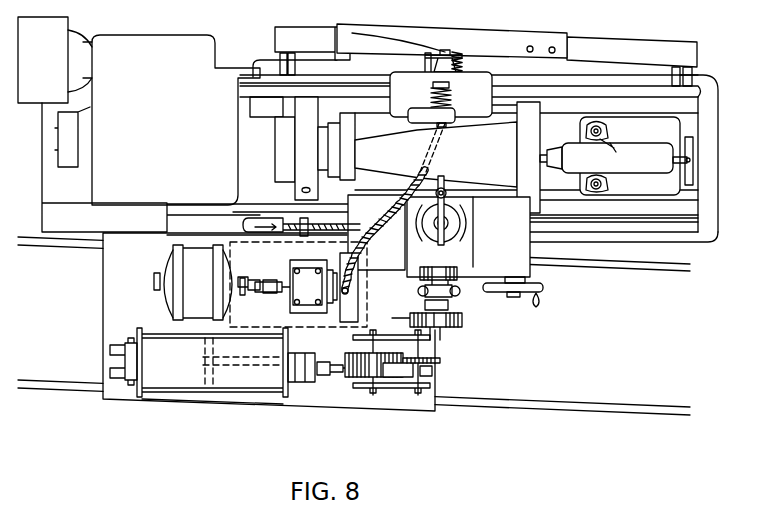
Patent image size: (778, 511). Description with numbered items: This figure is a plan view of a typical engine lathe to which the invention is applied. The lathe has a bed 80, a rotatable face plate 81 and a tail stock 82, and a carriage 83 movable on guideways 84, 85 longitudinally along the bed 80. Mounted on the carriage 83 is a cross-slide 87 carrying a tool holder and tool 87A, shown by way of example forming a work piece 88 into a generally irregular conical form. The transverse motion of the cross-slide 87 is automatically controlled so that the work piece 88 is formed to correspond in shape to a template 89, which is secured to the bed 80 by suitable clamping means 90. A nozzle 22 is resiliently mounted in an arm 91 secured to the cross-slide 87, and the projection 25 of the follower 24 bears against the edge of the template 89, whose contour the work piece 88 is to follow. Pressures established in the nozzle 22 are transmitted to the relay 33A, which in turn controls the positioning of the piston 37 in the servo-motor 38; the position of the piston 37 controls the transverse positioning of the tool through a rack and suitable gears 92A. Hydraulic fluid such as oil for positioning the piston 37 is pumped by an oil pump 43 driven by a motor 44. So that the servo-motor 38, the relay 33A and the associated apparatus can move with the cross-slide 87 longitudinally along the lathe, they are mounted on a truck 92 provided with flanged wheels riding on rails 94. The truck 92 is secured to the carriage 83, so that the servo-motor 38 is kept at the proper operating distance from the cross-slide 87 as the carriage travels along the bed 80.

The nozzle 22 is at (441, 94).
The follower 24 is at (428, 62).
The projection 25 is at (452, 50).
The relay 33A is at (362, 312).
The piston 37 is at (200, 366).
The servo-motor 38 is at (220, 401).
The oil pump 43 is at (290, 268).
The motor 44 is at (165, 258).
The bed 80 is at (718, 232).
The face plate 81 is at (295, 135).
The tail stock 82 is at (625, 145).
The carriage 83 is at (532, 281).
The guideway 84 is at (688, 221).
The guideway 85 is at (718, 103).
The cross-slide 87 is at (465, 213).
The tool 87A is at (462, 247).
The work piece 88 is at (436, 154).
The template 89 is at (563, 54).
The clamping means 90 is at (344, 43).
The arm 91 is at (453, 111).
The truck 92 is at (103, 305).
The gears 92A is at (440, 360).
The rails 94 is at (627, 272).